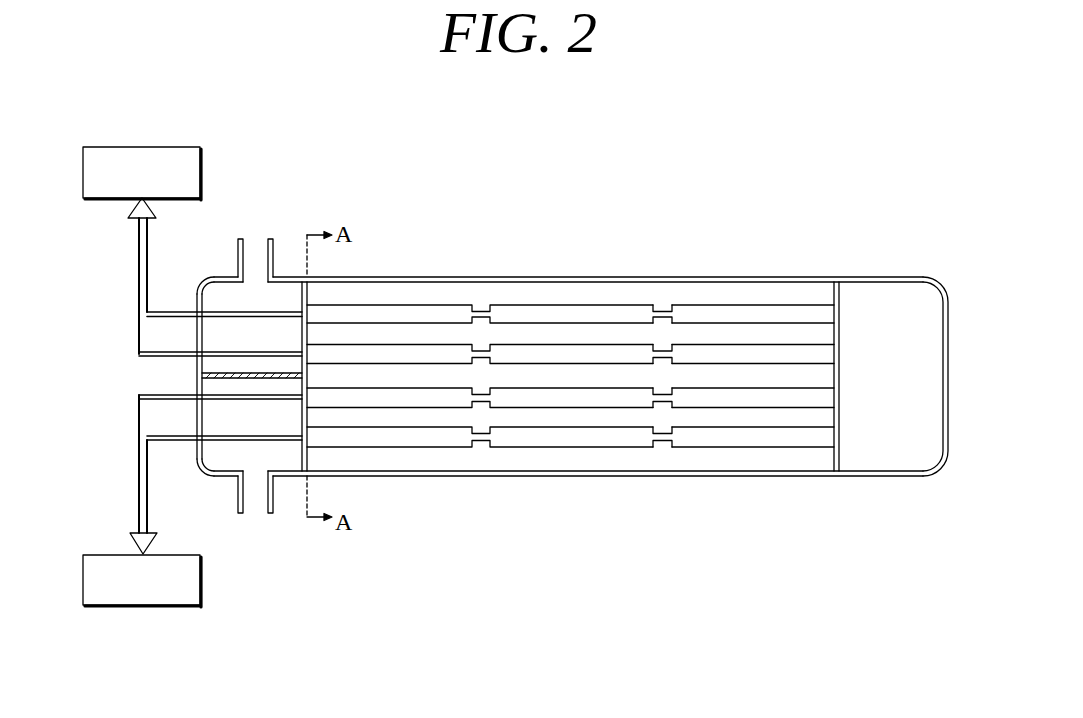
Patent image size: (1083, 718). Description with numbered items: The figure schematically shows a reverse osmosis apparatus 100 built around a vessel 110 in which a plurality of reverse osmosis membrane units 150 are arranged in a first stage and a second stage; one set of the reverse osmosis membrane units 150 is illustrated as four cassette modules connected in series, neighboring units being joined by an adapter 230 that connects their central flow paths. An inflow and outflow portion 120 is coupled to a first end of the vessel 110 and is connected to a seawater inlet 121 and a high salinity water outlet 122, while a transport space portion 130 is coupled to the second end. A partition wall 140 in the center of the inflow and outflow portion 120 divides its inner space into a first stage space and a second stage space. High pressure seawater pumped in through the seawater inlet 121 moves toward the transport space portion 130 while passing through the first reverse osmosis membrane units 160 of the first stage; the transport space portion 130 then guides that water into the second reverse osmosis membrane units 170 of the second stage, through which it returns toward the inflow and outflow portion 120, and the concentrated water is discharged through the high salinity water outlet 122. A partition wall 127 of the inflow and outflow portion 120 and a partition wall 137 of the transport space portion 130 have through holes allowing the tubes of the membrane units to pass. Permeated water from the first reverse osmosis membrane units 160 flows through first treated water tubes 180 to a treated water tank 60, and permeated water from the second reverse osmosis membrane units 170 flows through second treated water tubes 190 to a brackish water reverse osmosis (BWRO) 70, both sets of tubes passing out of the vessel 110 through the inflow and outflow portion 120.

The treated water tank 60 is at (141, 138).
The brackish water reverse osmosis (BWRO) 70 is at (141, 607).
The reverse osmosis apparatus 100 is at (514, 362).
The vessel 110 is at (585, 278).
The inflow and outflow portion 120 is at (284, 277).
The seawater inlet 121 is at (238, 247).
The high salinity water outlet 122 is at (238, 490).
The partition wall of the inflow and outflow portion 127 is at (310, 455).
The transport space portion 130 is at (898, 277).
The partition wall of the transport space portion 137 is at (834, 334).
The partition wall 140 is at (228, 373).
The reverse osmosis membrane units 150 is at (570, 399).
The first reverse osmosis membrane units 160 is at (448, 312).
The second reverse osmosis membrane units 170 is at (762, 393).
The first treated water tubes 180 is at (138, 256).
The second treated water tubes 190 is at (138, 496).
The adapter 230 is at (662, 310).